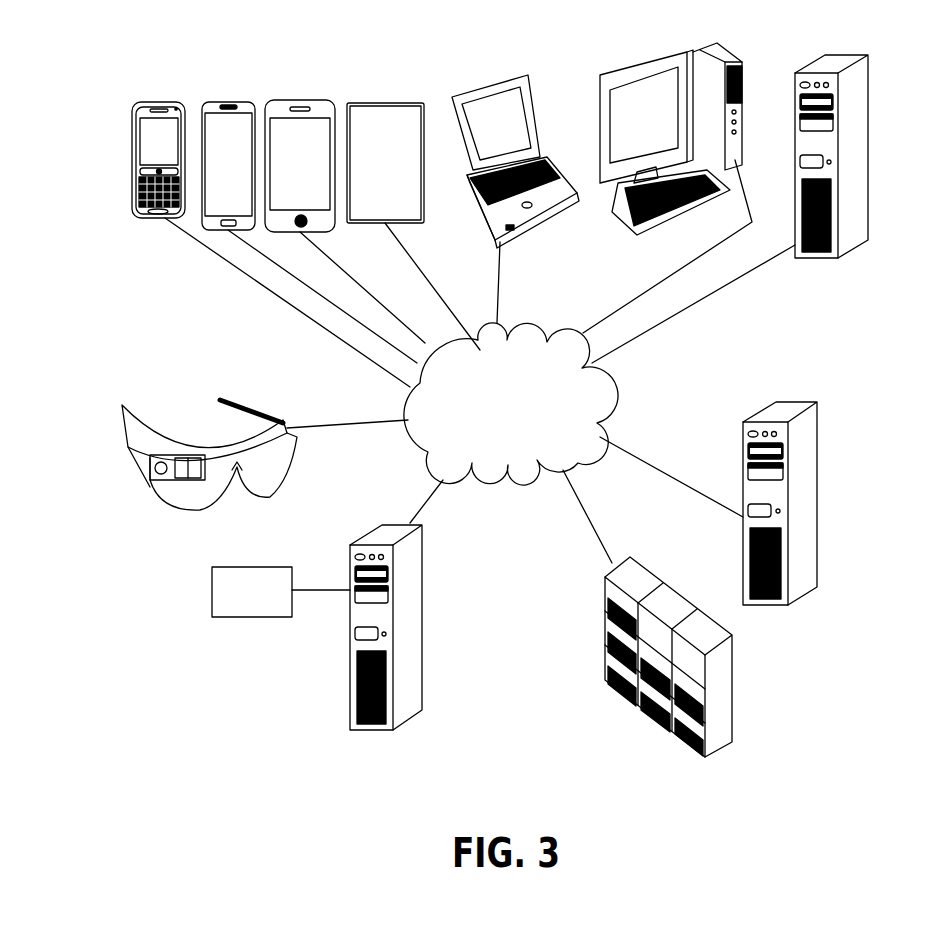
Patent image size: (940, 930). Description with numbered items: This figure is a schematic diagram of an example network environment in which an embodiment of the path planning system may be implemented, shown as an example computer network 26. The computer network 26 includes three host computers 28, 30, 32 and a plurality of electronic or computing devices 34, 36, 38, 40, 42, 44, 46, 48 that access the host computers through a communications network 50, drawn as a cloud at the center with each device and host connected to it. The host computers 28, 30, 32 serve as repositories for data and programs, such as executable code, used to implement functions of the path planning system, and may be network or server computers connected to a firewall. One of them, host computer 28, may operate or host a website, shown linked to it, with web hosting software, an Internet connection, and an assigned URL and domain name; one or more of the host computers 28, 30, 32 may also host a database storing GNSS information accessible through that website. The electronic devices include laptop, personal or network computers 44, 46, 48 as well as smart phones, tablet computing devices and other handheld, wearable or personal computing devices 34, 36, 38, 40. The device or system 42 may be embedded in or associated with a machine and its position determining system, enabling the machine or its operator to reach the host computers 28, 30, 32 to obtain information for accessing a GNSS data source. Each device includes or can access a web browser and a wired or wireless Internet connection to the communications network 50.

The computer network 26 is at (814, 321).
The host computer 28 is at (410, 555).
The host computer 30 is at (808, 432).
The host computer 32 is at (678, 588).
The electronic device 34 is at (172, 447).
The electronic device 36 is at (152, 100).
The electronic device 38 is at (212, 100).
The electronic device 40 is at (282, 100).
The device or system 42 is at (371, 102).
The laptop computer 44 is at (465, 92).
The personal computer 46 is at (625, 70).
The network computer 48 is at (858, 84).
The communications network 50 is at (433, 440).